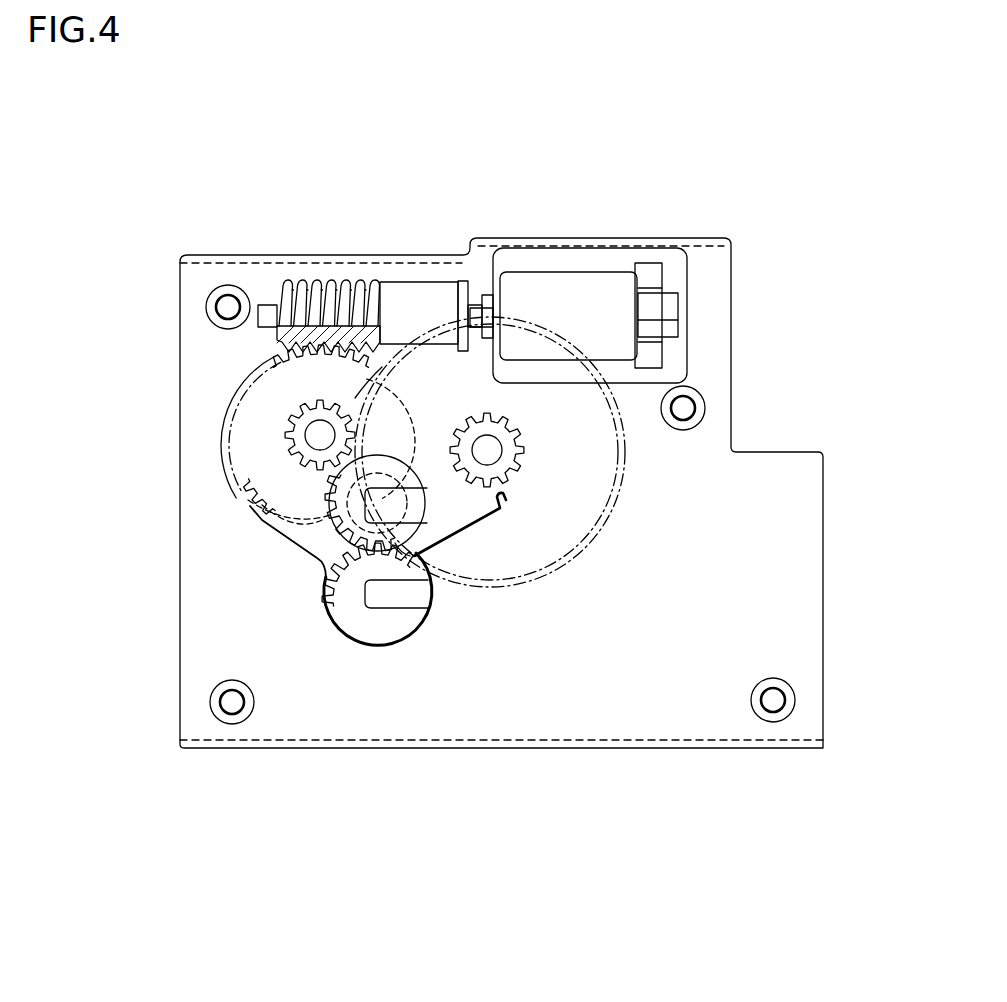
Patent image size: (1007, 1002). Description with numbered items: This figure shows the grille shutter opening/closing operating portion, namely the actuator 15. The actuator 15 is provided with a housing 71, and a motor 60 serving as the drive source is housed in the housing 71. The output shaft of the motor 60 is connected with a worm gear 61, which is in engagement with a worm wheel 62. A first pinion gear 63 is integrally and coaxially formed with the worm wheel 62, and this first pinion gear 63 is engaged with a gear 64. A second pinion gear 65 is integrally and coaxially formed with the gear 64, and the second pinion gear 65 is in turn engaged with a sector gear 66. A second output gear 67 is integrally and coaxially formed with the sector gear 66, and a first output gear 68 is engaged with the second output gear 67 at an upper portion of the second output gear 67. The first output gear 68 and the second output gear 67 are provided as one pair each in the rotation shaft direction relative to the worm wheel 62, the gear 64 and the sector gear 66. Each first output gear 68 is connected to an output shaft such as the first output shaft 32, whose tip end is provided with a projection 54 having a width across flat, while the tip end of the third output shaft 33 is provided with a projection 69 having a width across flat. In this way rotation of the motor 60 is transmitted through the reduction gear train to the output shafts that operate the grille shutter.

The actuator 15 is at (720, 200).
The first output shaft 32 is at (420, 530).
The third output shaft 33 is at (344, 637).
The projection 54 is at (410, 523).
The motor 60 is at (528, 262).
The worm gear 61 is at (338, 281).
The worm wheel 62 is at (252, 414).
The first pinion gear 63 is at (287, 431).
The gear 64 is at (438, 376).
The second pinion gear 65 is at (527, 453).
The sector gear 66 is at (257, 521).
The second output gear 67 is at (330, 622).
The first output gear 68 is at (355, 535).
The projection 69 is at (403, 613).
The housing 71 is at (733, 275).